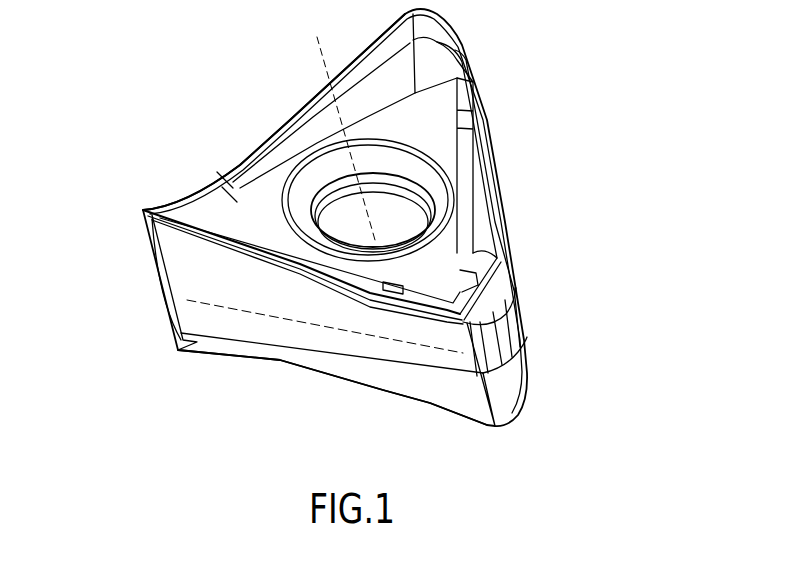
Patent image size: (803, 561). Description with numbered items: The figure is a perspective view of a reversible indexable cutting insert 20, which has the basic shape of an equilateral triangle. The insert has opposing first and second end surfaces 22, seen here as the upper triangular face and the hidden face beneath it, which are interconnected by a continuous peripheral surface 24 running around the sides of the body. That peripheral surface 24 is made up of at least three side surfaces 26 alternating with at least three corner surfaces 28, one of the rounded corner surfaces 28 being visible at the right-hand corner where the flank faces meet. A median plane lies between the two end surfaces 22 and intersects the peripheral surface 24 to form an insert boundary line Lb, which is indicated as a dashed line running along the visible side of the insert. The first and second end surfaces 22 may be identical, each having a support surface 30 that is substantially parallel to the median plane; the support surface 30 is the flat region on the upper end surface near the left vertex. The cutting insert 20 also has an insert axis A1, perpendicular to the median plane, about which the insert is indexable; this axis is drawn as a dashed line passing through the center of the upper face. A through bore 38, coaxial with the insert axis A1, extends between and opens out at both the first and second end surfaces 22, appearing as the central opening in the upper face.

The cutting insert 20 is at (345, 231).
The first and second end surfaces 22 is at (295, 155).
The peripheral surface 24 is at (202, 273).
The side surfaces 26 is at (244, 334).
The corner surfaces 28 is at (500, 333).
The support surface 30 is at (233, 203).
The through bore 38 is at (410, 207).
The insert axis A1 is at (327, 123).
The insert boundary line Lb is at (300, 322).